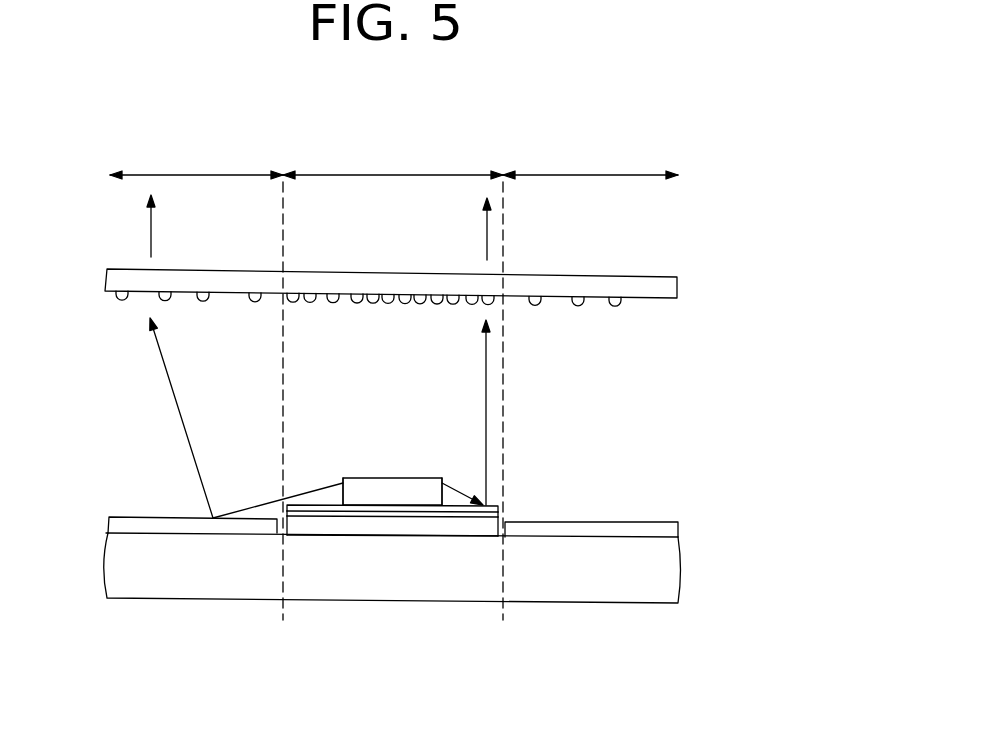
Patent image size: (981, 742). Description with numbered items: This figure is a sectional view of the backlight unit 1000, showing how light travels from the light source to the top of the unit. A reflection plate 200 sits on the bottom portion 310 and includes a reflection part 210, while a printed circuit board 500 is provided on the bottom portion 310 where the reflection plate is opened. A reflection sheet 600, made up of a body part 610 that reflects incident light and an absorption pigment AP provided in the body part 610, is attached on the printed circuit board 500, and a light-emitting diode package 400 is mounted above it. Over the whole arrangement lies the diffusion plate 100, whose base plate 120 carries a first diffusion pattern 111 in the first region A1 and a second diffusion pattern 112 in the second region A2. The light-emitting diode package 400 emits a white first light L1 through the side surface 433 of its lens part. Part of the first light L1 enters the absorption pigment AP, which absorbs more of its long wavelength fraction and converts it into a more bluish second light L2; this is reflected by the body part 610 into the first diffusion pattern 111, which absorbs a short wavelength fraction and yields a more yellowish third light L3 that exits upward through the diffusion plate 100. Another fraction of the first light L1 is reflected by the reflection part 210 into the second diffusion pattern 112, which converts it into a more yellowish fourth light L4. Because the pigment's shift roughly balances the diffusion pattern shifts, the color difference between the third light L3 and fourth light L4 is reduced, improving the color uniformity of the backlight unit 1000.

The backlight unit 1000 is at (718, 96).
The diffusion plate 100 is at (667, 266).
The base plate 120 is at (114, 278).
The first diffusion pattern 111 is at (406, 329).
The second diffusion pattern 112 is at (206, 327).
The reflection plate 200 is at (109, 498).
The reflection part 210 is at (115, 526).
The bottom portion 310 is at (113, 563).
The light-emitting diode package 400 is at (390, 478).
The side surface 433 is at (338, 478).
The reflection sheet 600 is at (513, 500).
The body part 610 is at (352, 516).
The printed circuit board 500 is at (397, 525).
The absorption pigment AP is at (303, 534).
The first light L1 is at (181, 418).
The second light L2 is at (487, 378).
The third light L3 is at (487, 228).
The fourth light L4 is at (151, 222).
The first region A1 is at (393, 164).
The second region A2 is at (394, 164).